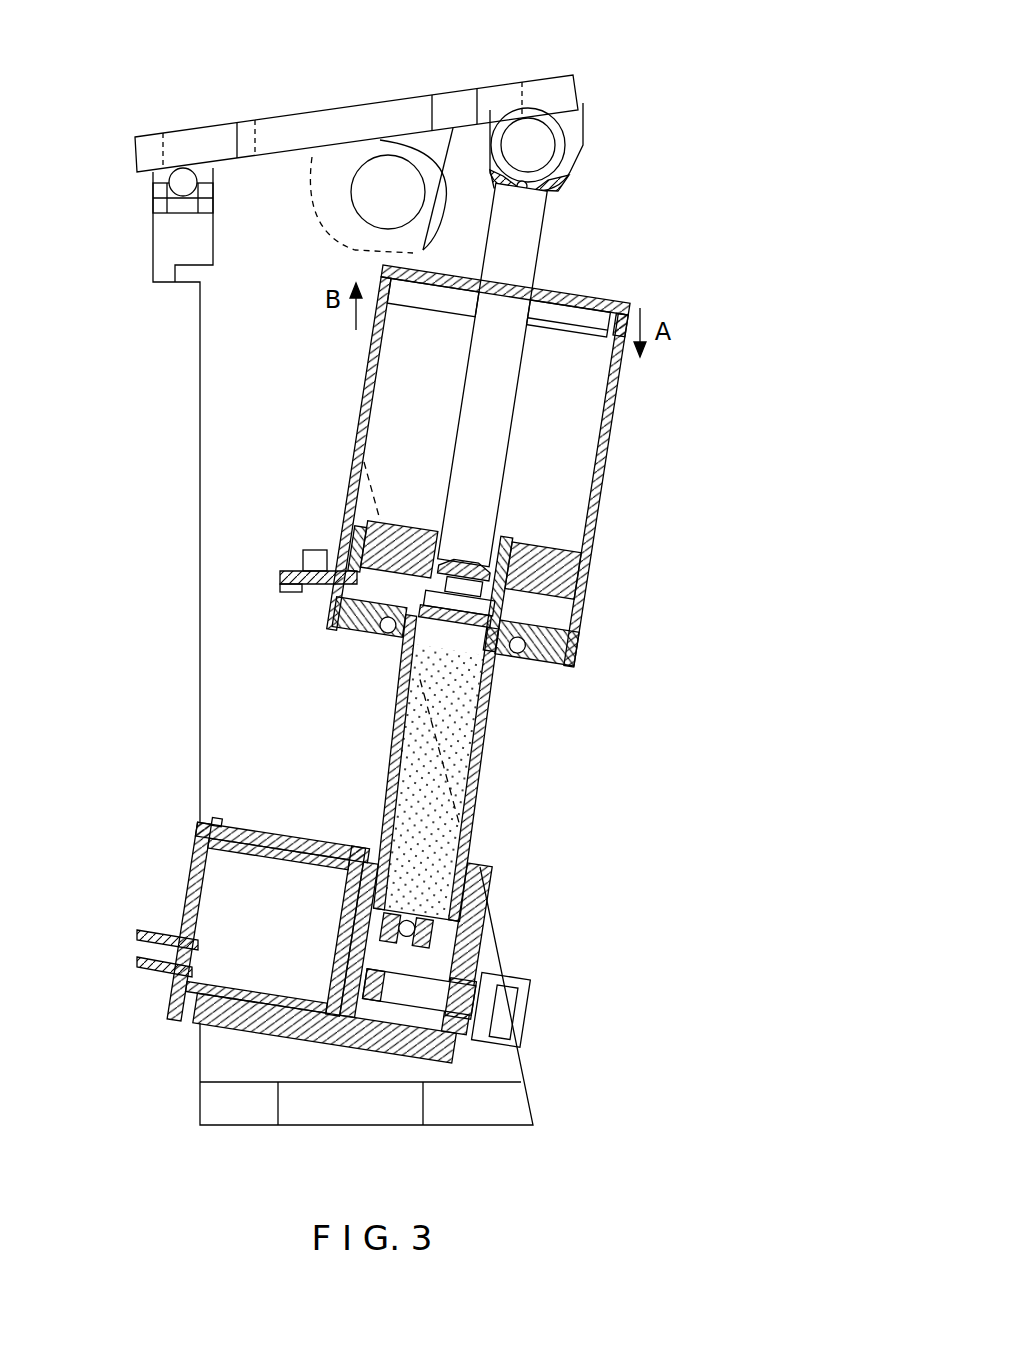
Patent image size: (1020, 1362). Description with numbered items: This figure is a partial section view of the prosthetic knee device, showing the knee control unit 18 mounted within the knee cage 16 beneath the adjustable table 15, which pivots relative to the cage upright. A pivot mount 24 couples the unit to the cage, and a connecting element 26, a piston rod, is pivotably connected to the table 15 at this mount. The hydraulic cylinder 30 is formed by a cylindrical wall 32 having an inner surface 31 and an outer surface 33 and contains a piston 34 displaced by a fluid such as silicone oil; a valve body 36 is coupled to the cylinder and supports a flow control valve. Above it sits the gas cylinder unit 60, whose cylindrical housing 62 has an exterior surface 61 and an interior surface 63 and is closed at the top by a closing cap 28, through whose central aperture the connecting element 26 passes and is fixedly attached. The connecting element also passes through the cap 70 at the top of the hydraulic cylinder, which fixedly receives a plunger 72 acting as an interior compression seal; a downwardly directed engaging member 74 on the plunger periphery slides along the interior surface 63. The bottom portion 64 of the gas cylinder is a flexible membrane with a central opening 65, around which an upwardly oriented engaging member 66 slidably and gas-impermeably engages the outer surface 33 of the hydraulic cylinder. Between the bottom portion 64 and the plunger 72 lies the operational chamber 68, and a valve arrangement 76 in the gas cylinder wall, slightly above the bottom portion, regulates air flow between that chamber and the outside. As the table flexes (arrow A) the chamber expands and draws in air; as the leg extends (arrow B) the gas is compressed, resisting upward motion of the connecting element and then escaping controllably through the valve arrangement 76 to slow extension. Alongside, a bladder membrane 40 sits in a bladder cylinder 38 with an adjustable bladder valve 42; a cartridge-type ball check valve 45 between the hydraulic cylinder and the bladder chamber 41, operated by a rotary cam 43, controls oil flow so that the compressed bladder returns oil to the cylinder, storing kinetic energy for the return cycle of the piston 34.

The adjustable table 15 is at (453, 90).
The knee cage 16 is at (197, 587).
The knee control unit 18 is at (688, 450).
The pivot mount 24 is at (566, 143).
The connecting element 26 is at (537, 212).
The closing cap 28 is at (588, 297).
The hydraulic cylinder 30 is at (510, 831).
The inner surface 31 is at (393, 827).
The cylindrical wall 32 is at (422, 768).
The outer surface 33 is at (400, 683).
The piston 34 is at (472, 690).
The valve body 36 is at (345, 1040).
The bladder cylinder 38 is at (237, 1030).
The bladder membrane 40 is at (253, 870).
The bladder chamber 41 is at (240, 830).
The bladder valve 42 is at (140, 967).
The rotary cam 43 is at (510, 1007).
The ball check valve 45 is at (427, 947).
The gas cylinder unit 60 is at (642, 397).
The exterior surface 61 is at (367, 368).
The cylindrical housing 62 is at (582, 498).
The interior surface 63 is at (607, 443).
The bottom portion 64 is at (580, 680).
The central opening 65 is at (405, 648).
The engaging member 66 is at (583, 608).
The operational chamber 68 is at (583, 632).
The cap 70 is at (585, 537).
The plunger 72 is at (393, 466).
The engaging member 74 is at (347, 490).
The valve arrangement 76 is at (287, 567).